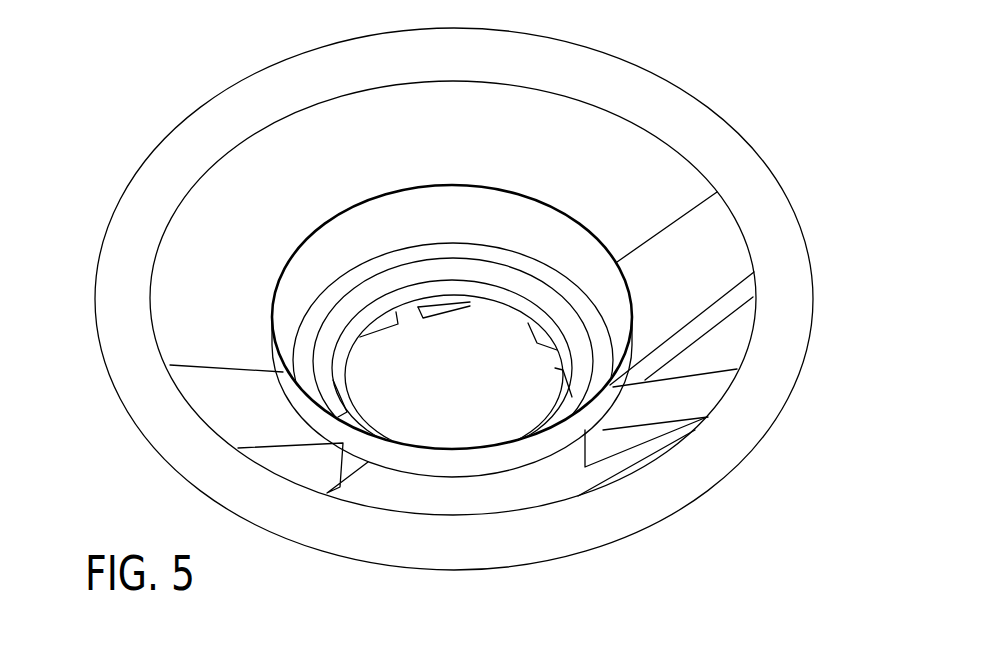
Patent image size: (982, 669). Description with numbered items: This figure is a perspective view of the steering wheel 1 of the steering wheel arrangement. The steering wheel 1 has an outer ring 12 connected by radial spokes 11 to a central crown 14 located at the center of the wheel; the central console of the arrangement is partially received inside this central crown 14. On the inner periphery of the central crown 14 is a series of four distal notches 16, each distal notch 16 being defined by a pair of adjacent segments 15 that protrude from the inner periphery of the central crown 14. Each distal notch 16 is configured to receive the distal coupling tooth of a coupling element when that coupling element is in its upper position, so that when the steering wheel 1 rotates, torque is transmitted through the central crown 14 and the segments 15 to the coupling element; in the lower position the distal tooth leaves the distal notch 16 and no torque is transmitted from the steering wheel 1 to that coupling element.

The steering wheel 1 is at (805, 117).
The radial spokes 11 is at (667, 235).
The outer ring 12 is at (797, 384).
The central crown 14 is at (417, 200).
The adjacent segments 15 is at (566, 387).
The distal notches 16 is at (410, 320).